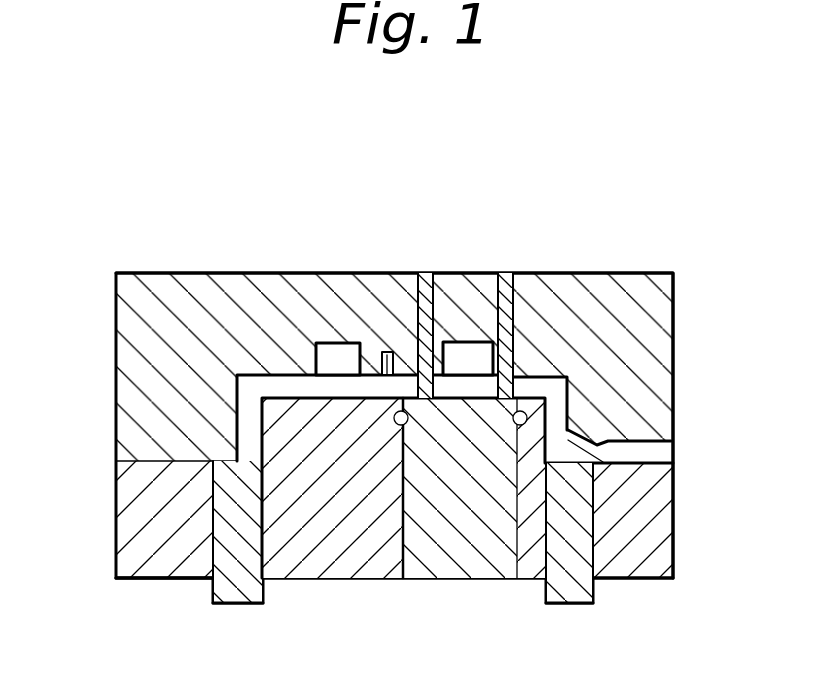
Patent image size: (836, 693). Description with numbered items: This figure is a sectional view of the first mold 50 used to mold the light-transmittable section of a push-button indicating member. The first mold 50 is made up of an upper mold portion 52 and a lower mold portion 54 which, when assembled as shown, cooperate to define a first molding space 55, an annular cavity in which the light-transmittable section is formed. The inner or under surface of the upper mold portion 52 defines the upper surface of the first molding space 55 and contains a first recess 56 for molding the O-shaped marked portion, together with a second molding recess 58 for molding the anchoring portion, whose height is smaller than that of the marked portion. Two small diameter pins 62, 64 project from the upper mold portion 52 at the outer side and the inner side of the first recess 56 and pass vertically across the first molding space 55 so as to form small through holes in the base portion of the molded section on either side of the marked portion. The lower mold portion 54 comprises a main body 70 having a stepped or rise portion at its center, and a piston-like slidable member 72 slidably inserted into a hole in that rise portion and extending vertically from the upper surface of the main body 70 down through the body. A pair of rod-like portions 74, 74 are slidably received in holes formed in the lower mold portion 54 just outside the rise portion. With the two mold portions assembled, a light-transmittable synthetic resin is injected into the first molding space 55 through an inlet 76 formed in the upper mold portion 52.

The first mold 50 is at (630, 218).
The upper mold portion 52 is at (116, 346).
The lower mold portion 54 is at (116, 510).
The first molding space 55 is at (248, 395).
The first recess 56 is at (327, 356).
The second molding recess 58 is at (384, 362).
The small diameter pin 62 is at (418, 300).
The small diameter pin 64 is at (513, 327).
The main body 70 is at (130, 567).
The piston-like slidable member 72 is at (453, 555).
The rod-like portion 74 is at (237, 593).
The inlet 76 is at (593, 443).